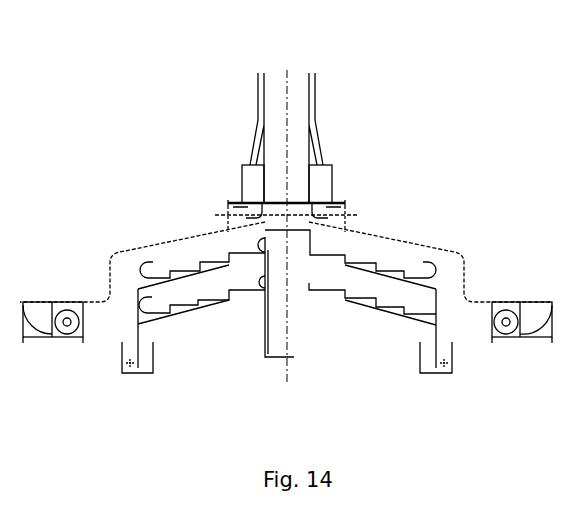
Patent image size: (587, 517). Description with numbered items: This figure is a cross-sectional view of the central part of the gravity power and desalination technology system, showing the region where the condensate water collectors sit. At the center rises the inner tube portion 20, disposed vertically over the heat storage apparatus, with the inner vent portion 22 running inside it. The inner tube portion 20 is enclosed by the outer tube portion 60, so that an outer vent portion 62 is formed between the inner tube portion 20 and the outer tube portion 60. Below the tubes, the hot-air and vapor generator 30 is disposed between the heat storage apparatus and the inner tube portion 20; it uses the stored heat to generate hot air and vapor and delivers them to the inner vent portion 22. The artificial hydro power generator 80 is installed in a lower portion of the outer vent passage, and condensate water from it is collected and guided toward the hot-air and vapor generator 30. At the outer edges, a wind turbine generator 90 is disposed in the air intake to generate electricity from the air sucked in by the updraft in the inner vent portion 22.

The inner tube portion 20 is at (313, 83).
The inner vent portion 22 is at (297, 98).
The hot-air and vapor generator 30 is at (360, 262).
The outer tube portion 60 is at (257, 93).
The outer vent portion 62 is at (262, 110).
The artificial hydro power generator 80 is at (332, 167).
The wind turbine generator 90 is at (505, 308).